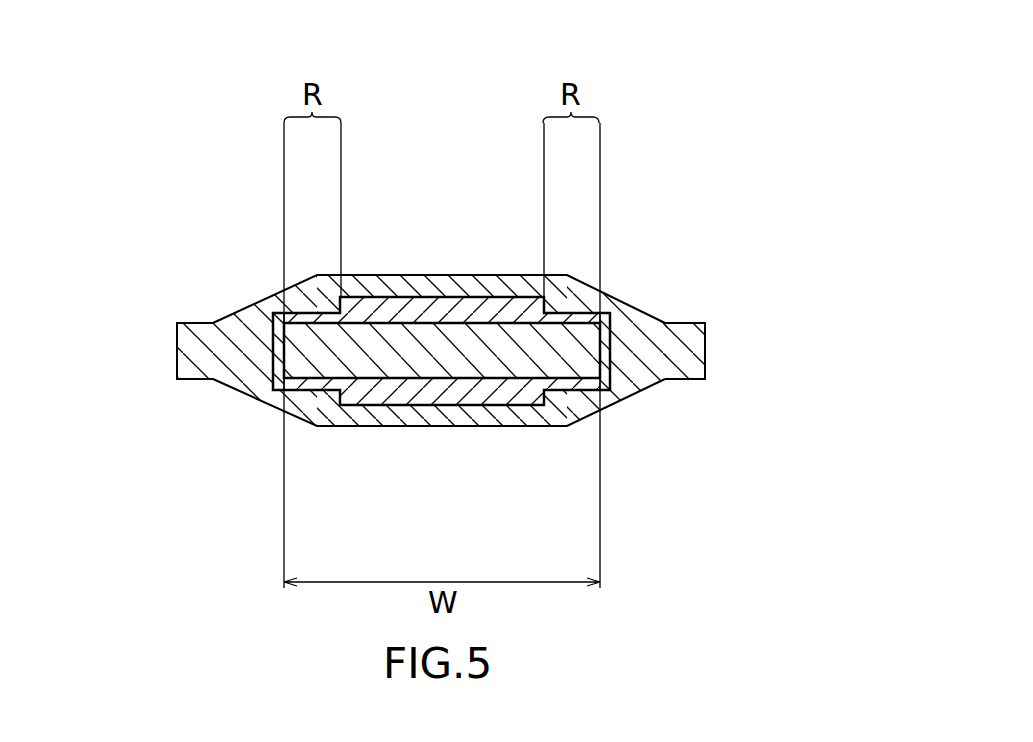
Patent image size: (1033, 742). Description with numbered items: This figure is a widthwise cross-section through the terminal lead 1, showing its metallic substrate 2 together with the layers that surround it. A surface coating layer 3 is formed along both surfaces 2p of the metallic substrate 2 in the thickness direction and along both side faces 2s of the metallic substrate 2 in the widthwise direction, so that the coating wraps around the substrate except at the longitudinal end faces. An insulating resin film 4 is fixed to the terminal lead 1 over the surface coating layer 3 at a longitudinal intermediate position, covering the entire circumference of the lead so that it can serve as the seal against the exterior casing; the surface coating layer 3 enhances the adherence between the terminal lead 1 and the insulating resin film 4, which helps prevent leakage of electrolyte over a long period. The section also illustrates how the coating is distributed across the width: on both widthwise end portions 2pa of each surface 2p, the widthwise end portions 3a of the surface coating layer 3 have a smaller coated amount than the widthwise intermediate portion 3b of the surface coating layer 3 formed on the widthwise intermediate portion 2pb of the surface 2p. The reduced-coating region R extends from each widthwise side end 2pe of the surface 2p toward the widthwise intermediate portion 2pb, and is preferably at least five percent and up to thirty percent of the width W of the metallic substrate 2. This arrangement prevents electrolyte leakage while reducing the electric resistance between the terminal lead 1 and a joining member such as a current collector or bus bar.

The terminal lead 1 is at (729, 189).
The metallic substrate 2 is at (505, 345).
The surface of the metallic substrate 2p is at (469, 308).
The widthwise end portion of the surface 2pa is at (306, 320).
The widthwise intermediate portion of the surface 2pb is at (427, 307).
The widthwise side end of the surface 2pe is at (282, 316).
The side face of the metallic substrate 2s is at (237, 340).
The surface coating layer 3 is at (380, 290).
The widthwise end portion of the surface coating layer 3a is at (313, 316).
The widthwise intermediate portion of the surface coating layer 3b is at (435, 296).
The insulating resin film 4 is at (238, 357).